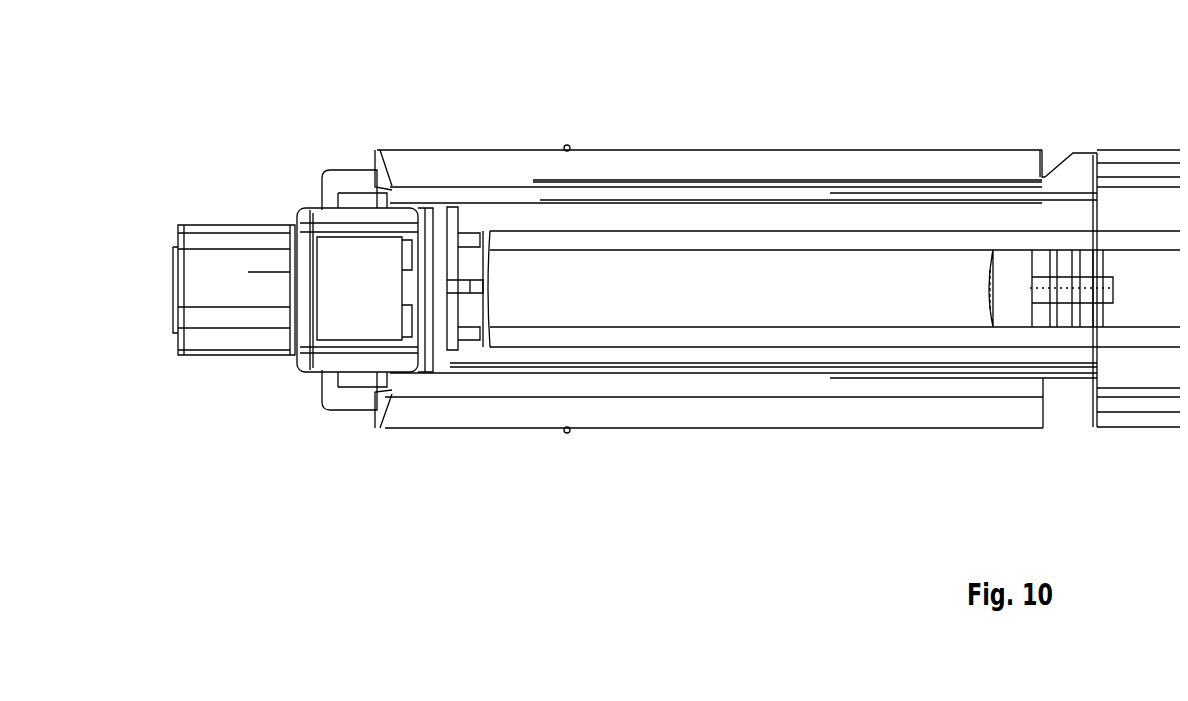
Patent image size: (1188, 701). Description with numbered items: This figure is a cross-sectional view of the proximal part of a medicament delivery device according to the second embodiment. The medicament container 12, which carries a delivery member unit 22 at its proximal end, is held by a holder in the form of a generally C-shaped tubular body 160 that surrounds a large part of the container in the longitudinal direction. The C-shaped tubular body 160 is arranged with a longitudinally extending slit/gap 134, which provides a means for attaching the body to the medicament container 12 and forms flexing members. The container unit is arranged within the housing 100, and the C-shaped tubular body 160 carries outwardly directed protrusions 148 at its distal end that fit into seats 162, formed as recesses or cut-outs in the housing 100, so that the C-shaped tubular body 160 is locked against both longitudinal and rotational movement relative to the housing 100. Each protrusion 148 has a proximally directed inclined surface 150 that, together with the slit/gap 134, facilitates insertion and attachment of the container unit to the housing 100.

The delivery member unit 22 is at (250, 194).
The housing 100 is at (452, 157).
The C-shaped tubular body 160 is at (722, 190).
The seats 162 is at (1053, 158).
The proximally directed inclined surface 150 is at (1052, 157).
The outwardly directed protrusions 148 is at (1087, 165).
The longitudinally extending slit/gap 134 is at (465, 353).
The medicament container 12 is at (755, 305).